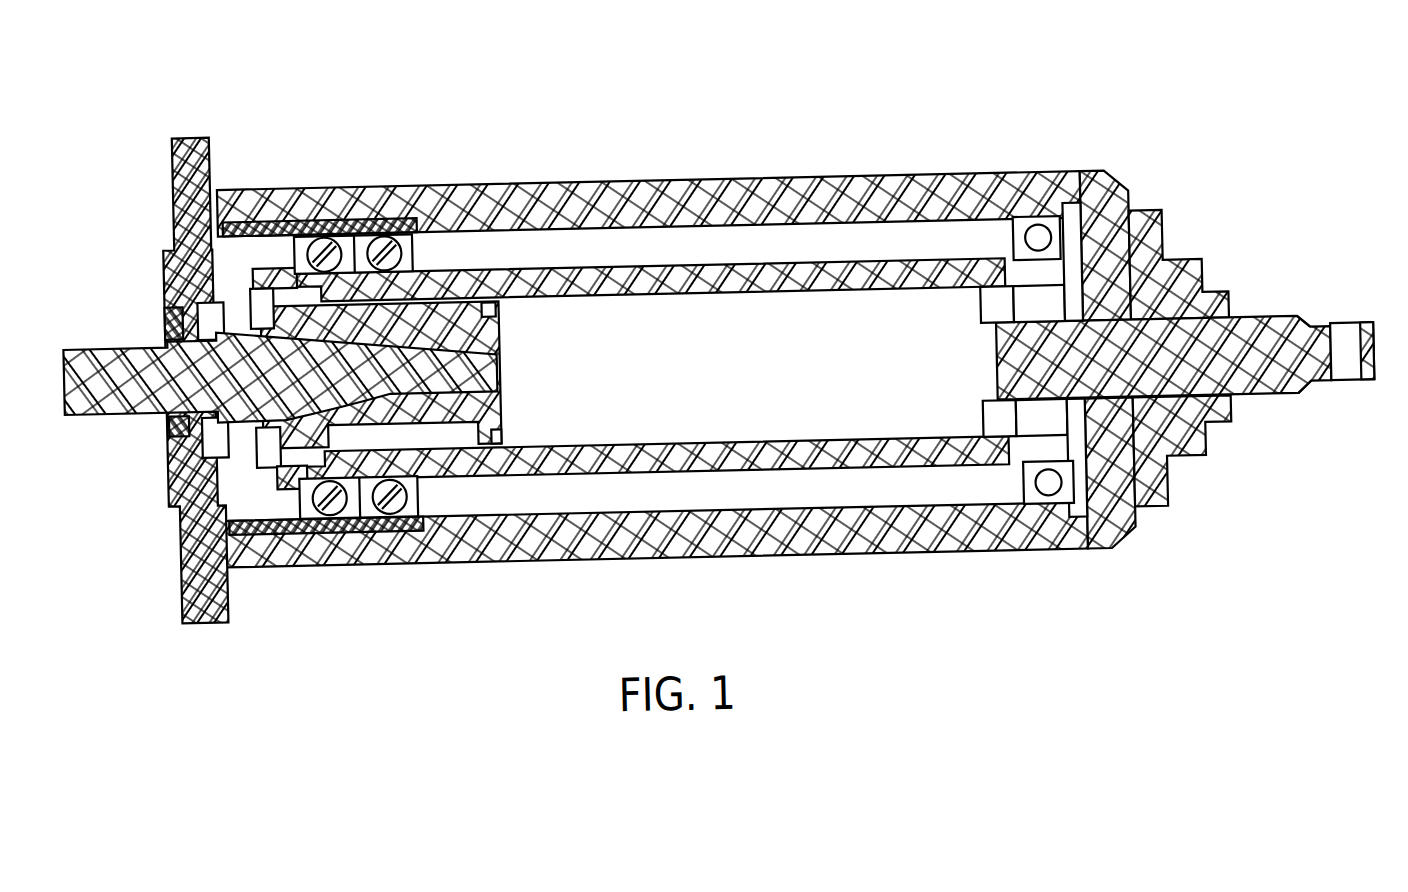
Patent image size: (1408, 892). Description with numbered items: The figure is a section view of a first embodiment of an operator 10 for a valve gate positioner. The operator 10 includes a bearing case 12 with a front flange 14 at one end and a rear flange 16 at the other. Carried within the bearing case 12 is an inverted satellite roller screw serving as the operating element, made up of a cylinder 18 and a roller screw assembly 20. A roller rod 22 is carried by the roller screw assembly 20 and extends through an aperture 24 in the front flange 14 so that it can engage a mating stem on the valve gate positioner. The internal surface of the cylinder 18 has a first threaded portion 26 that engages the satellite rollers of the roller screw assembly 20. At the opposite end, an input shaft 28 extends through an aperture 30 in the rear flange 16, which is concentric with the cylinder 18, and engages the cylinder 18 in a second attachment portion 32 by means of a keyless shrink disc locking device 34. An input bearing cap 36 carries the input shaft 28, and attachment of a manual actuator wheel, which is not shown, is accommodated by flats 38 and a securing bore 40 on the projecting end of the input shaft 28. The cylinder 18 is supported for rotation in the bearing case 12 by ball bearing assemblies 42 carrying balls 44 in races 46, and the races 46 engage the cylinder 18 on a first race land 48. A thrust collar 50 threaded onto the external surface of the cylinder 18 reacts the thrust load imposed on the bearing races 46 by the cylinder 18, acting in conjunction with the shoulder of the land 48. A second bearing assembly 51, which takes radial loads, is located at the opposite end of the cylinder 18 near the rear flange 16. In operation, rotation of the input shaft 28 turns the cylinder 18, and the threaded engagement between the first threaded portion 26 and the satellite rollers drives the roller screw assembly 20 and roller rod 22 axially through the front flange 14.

The operator 10 is at (860, 114).
The bearing case 12 is at (474, 180).
The front flange 14 is at (195, 126).
The rear flange 16 is at (1109, 557).
The cylinder 18 is at (574, 267).
The roller screw assembly 20 is at (403, 373).
The roller rod 22 is at (116, 397).
The aperture 24 is at (184, 311).
The first threaded portion 26 is at (572, 294).
The input shaft 28 is at (1277, 400).
The aperture 30 is at (1171, 473).
The second attachment portion 32 is at (1003, 443).
The keyless shrink disc locking device 34 is at (1003, 305).
The input bearing cap 36 is at (1189, 270).
The flats 38 is at (1311, 331).
The securing bore 40 is at (1343, 397).
The ball bearing assemblies 42 is at (412, 263).
The balls 44 is at (331, 240).
The races 46 is at (287, 511).
The first race land 48 is at (418, 226).
The thrust collar 50 is at (268, 467).
The second bearing assembly 51 is at (1042, 498).